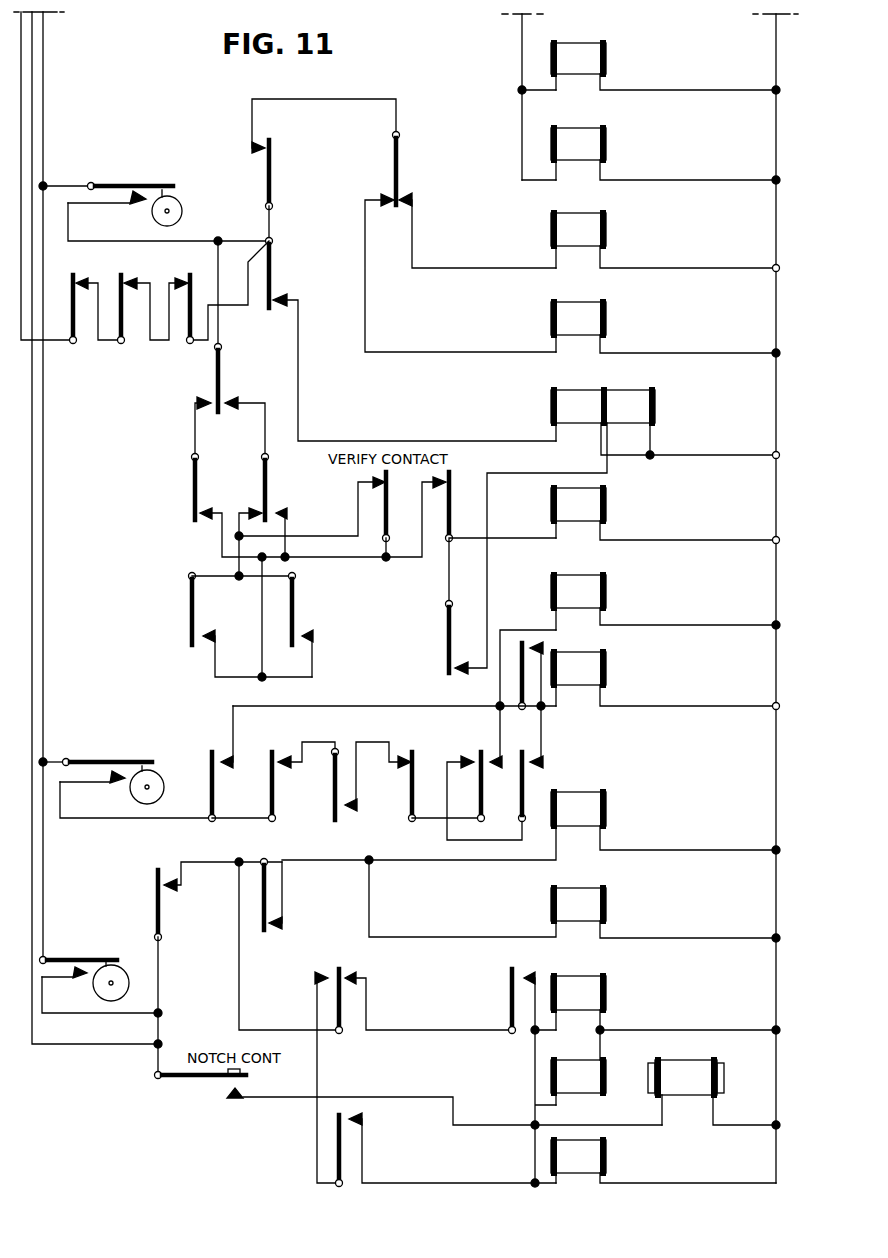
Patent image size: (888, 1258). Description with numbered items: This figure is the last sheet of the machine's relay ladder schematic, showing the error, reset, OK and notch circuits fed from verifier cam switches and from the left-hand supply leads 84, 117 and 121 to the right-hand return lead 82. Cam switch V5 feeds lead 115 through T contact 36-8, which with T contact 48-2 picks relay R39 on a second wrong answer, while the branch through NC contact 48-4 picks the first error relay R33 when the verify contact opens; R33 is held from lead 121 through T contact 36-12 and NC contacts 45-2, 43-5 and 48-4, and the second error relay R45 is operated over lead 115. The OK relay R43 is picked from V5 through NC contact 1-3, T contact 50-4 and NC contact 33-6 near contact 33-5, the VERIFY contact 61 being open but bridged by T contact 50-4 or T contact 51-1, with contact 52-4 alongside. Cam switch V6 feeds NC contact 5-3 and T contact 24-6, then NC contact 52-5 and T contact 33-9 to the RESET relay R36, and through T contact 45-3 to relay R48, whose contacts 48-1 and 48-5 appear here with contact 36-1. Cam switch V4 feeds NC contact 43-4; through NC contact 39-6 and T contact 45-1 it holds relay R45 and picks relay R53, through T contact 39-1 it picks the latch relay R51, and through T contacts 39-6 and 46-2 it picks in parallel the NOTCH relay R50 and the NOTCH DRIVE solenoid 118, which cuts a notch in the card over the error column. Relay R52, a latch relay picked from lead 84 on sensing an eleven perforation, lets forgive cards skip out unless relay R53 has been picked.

The lead 84 is at (44, 36).
The supply bus line 117 is at (28, 67).
The lead 121 is at (15, 133).
The return bus line 82 is at (776, 130).
The lead 115 is at (268, 230).
The NOTCH DRIVE solenoid 118 is at (718, 1092).
The cam switch V5 is at (185, 206).
The cam switch V6 is at (133, 760).
The cam switch V4 is at (73, 960).
The contact of relay R36 36-8 is at (251, 148).
The contact of relay R48 48-2 is at (412, 190).
The contact of relay R48 48-4 is at (287, 295).
The contact of relay R36 36-12 is at (98, 266).
The contact of relay R45 45-2 is at (147, 266).
The contact of relay R43 43-5 is at (202, 266).
The contact of relay R1 1-3 is at (206, 396).
The contact of relay R33 33-5 is at (210, 521).
The contact of relay R50 50-4 is at (285, 507).
The VERIFY contact 61 is at (389, 489).
The contact of relay R33 33-6 is at (452, 472).
The contact of relay R48 48-5 is at (462, 676).
The contact of relay R52 52-4 is at (190, 636).
The contact of relay R51 51-1 is at (310, 626).
The contact of relay R48 48-1 is at (540, 642).
The contact of relay R36 36-1 is at (228, 755).
The contact of relay R5 5-3 is at (285, 755).
The contact of relay R24 24-6 is at (357, 812).
The contact of relay R52 52-5 is at (400, 755).
The contact of relay R33 33-9 is at (463, 756).
The contact of relay R45 45-3 is at (545, 760).
The contact of relay R43 43-4 is at (178, 892).
The contact of relay R39 39-1 is at (283, 918).
The contact of relay R39 39-6 is at (320, 972).
The contact of relay R45 45-1 is at (530, 972).
The contact of relay R46 46-2 is at (364, 1120).
The relay R51 is at (606, 56).
The relay R52 is at (606, 138).
The relay R39 is at (606, 230).
The ERROR 2 relay R45 is at (606, 322).
The ERROR 1 relay R33 is at (655, 411).
The OK relay R43 is at (606, 504).
The RESET relay R36 is at (596, 593).
The relay R48 is at (590, 670).
The relay R53 is at (606, 1093).
The NOTCH relay R50 is at (606, 1166).